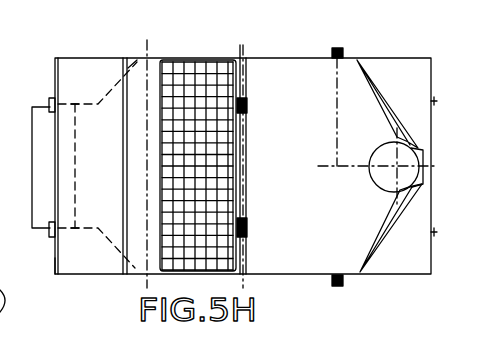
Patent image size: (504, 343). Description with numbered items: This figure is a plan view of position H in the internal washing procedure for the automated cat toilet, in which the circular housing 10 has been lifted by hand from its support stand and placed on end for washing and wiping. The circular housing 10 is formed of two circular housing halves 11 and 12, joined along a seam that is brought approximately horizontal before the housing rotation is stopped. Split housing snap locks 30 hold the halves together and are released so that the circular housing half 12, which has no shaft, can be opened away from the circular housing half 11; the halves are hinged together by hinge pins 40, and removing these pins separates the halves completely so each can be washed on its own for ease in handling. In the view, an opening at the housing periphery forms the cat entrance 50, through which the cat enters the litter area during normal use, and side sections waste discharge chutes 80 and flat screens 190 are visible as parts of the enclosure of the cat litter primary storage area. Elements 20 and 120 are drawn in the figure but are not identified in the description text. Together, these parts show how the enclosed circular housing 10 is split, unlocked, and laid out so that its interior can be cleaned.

The circular housing 10 is at (32, 107).
The circular housing half 11 is at (391, 57).
The circular housing half 12 is at (55, 267).
The support block 20 is at (333, 50).
The split housing snap locks 30 is at (431, 101).
The hinge pins 40 is at (248, 110).
The cat entrance 50 is at (385, 143).
The side sections waste discharge chutes 80 is at (365, 208).
The tray 120 is at (97, 92).
The flat screens 190 is at (160, 72).